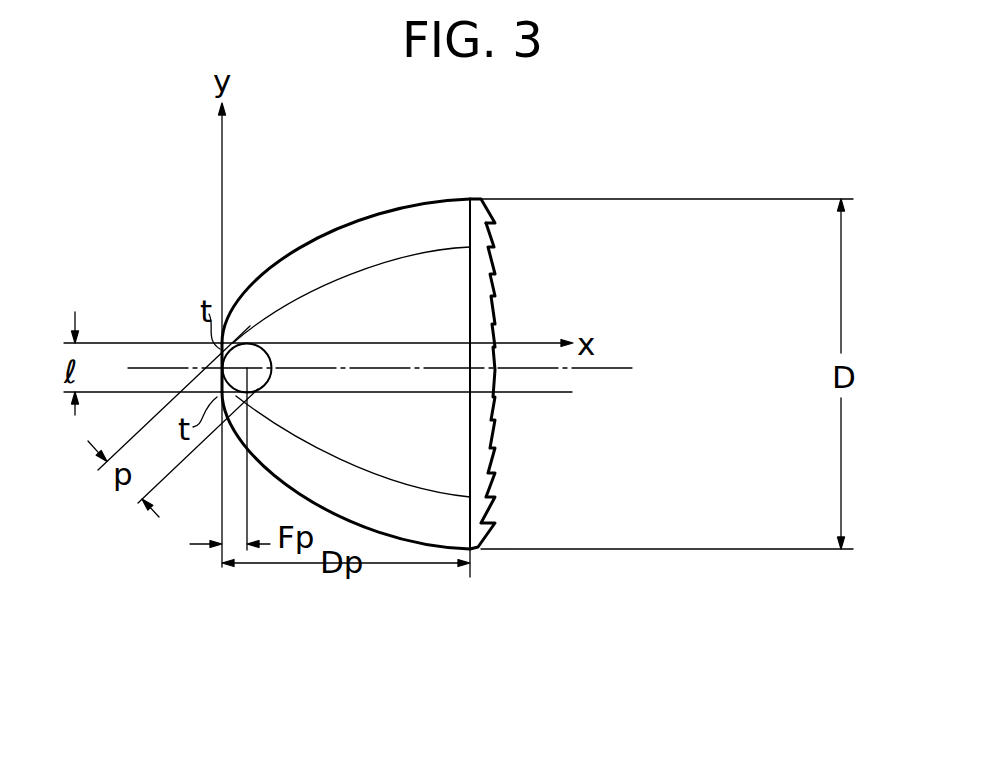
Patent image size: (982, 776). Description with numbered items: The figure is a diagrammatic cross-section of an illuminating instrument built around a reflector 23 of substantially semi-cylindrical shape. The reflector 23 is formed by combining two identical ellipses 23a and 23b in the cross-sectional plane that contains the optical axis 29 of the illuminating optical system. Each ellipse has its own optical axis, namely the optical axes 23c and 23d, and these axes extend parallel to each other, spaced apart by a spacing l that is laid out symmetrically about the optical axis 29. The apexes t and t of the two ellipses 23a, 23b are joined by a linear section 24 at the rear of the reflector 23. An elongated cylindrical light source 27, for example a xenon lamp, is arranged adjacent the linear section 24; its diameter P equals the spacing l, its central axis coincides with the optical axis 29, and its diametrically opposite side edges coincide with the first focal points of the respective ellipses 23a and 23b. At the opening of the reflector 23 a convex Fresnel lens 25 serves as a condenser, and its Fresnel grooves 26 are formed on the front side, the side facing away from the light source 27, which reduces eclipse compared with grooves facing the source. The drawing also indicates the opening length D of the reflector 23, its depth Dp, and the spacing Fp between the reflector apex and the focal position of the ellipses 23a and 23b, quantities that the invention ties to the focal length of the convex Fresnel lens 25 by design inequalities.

The reflector 23 is at (308, 242).
The ellipse 23a is at (383, 211).
The ellipse 23b is at (425, 543).
The optical axis 23c is at (543, 343).
The optical axis 23d is at (548, 392).
The linear section 24 is at (217, 352).
The convex Fresnel lens 25 is at (497, 283).
The Fresnel grooves 26 is at (484, 224).
The light source 27 is at (270, 352).
The optical axis 29 is at (617, 368).